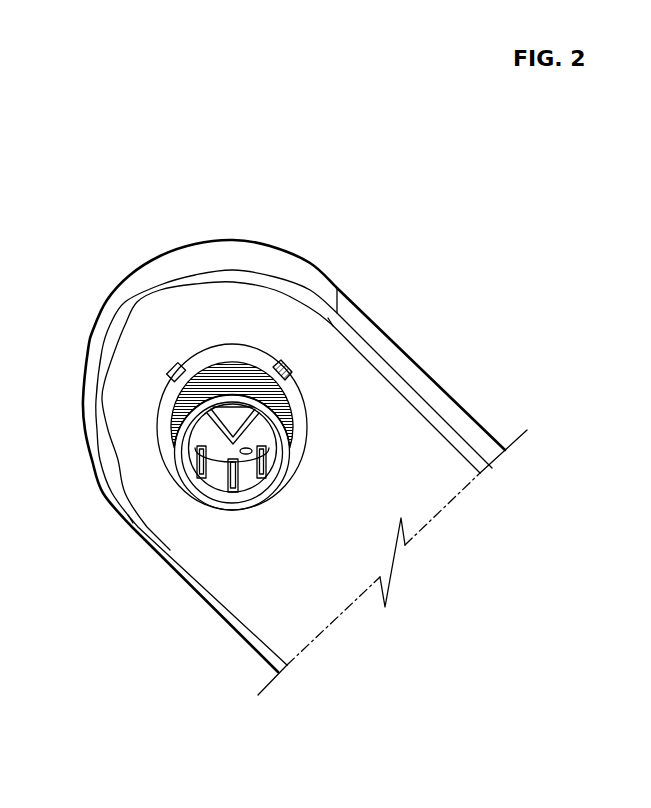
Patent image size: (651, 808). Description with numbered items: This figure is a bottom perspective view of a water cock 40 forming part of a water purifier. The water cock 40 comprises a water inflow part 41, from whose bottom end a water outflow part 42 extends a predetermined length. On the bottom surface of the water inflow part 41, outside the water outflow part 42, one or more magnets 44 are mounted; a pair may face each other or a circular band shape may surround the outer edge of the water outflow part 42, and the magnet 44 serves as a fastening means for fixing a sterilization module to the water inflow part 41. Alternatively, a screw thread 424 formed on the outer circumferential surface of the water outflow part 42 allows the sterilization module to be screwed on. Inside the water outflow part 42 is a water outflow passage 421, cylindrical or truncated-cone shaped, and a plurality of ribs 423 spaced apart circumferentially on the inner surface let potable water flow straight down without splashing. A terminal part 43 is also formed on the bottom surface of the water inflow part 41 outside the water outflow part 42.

The water cock 40 is at (263, 224).
The water inflow part 41 is at (137, 285).
The water outflow part 42 is at (148, 448).
The terminal part 43 is at (280, 364).
The magnet 44 is at (182, 366).
The water outflow passage 421 is at (248, 456).
The rib 423 is at (228, 477).
The screw thread 424 is at (157, 399).